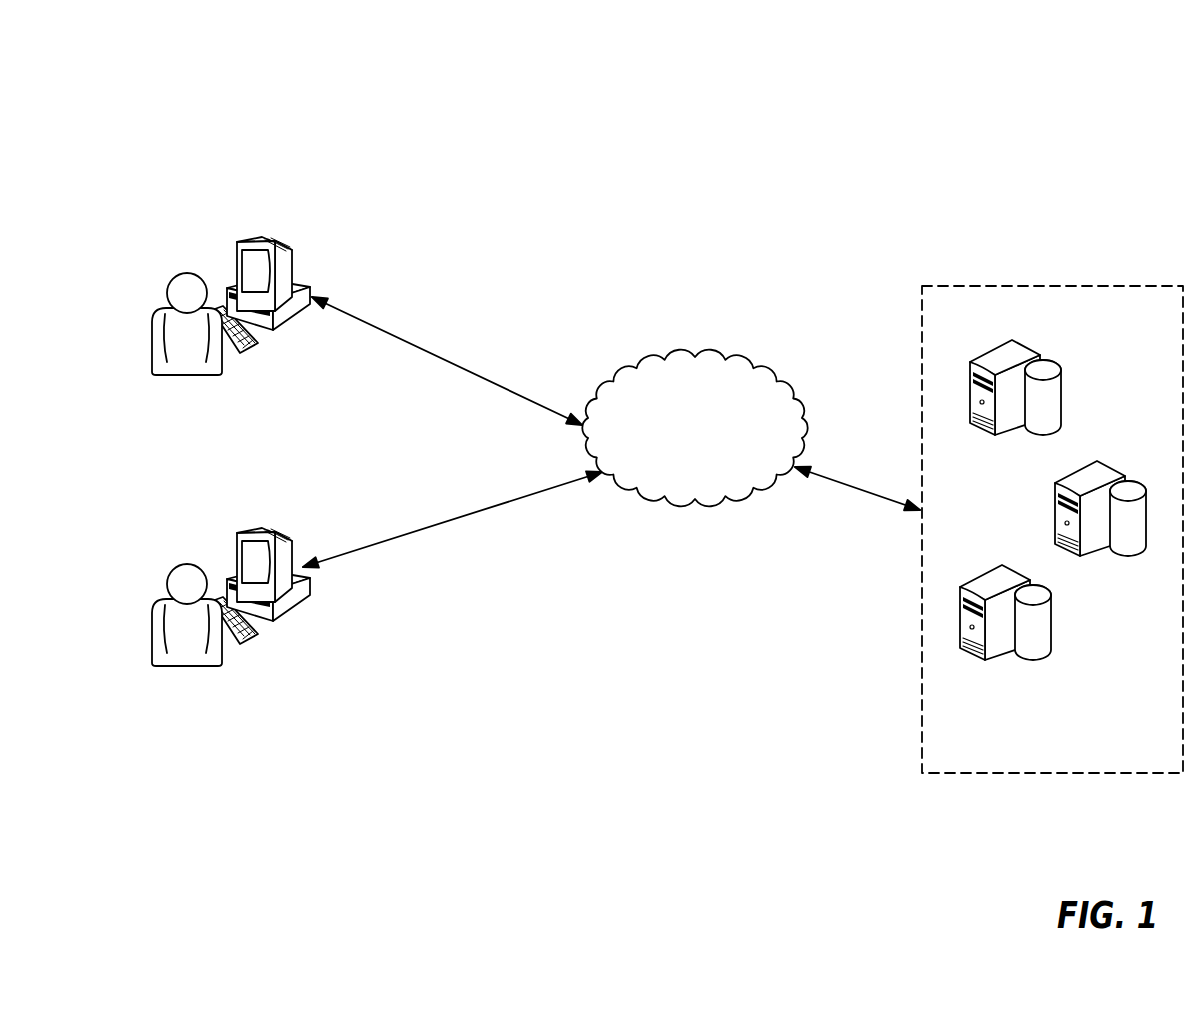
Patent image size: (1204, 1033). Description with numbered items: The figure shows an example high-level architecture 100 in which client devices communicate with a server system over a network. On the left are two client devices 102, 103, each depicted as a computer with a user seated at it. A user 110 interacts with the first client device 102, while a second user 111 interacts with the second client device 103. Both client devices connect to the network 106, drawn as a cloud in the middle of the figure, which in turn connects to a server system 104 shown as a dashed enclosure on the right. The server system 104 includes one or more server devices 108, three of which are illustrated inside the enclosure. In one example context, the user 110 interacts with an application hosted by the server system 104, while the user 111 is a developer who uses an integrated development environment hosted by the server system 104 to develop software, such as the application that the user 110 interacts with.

The architecture 100 is at (547, 118).
The client device 102 is at (237, 247).
The client device 103 is at (237, 538).
The server system 104 is at (1052, 285).
The network 106 is at (694, 353).
The server device 108 is at (1062, 373).
The user 110 is at (187, 375).
The user 111 is at (187, 666).